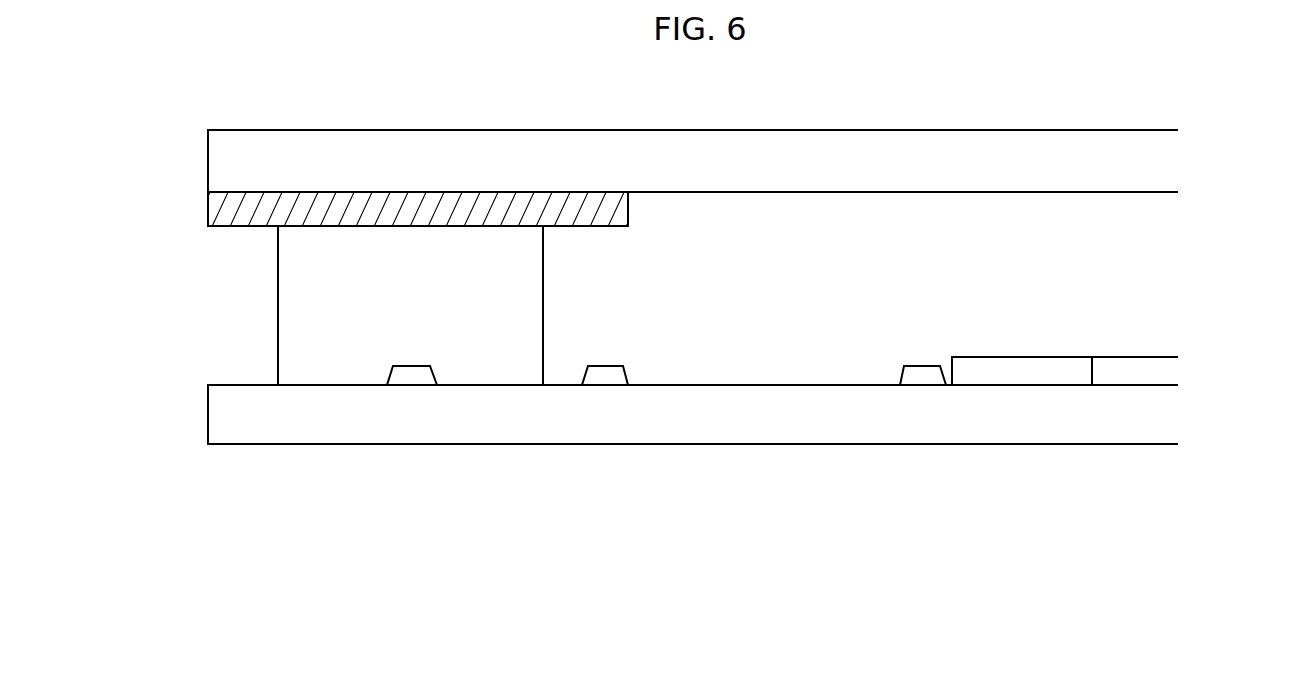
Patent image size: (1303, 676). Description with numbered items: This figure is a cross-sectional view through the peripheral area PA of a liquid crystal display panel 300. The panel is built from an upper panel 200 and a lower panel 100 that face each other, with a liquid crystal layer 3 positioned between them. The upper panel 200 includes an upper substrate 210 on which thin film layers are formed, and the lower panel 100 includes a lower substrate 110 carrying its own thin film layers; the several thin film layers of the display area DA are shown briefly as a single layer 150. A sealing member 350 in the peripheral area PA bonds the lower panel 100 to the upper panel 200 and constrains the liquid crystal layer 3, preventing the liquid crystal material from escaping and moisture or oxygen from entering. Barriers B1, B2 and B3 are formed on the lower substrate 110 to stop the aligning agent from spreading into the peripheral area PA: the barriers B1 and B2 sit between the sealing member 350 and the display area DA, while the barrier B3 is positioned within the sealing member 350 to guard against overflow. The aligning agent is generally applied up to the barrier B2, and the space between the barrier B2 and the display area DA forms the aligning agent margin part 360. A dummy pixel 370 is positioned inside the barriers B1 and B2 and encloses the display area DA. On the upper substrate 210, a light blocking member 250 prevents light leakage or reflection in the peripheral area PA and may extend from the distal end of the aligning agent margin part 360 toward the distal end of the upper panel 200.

The upper substrate 210 is at (268, 138).
The light blocking member 250 is at (208, 211).
The sealing member 350 is at (278, 310).
The lower substrate 110 is at (230, 440).
The barrier B3 is at (409, 377).
The barrier B2 is at (601, 377).
The barrier B1 is at (908, 378).
The dummy pixel 370 is at (1000, 365).
The single layer 150 is at (1121, 365).
The upper panel 200 is at (1182, 130).
The liquid crystal layer 3 is at (1182, 226).
The lower panel 100 is at (1182, 357).
The display panel 300 is at (1235, 153).
The peripheral area PA is at (1090, 484).
The display area DA is at (1092, 590).
The aligning agent margin part 360 is at (628, 450).